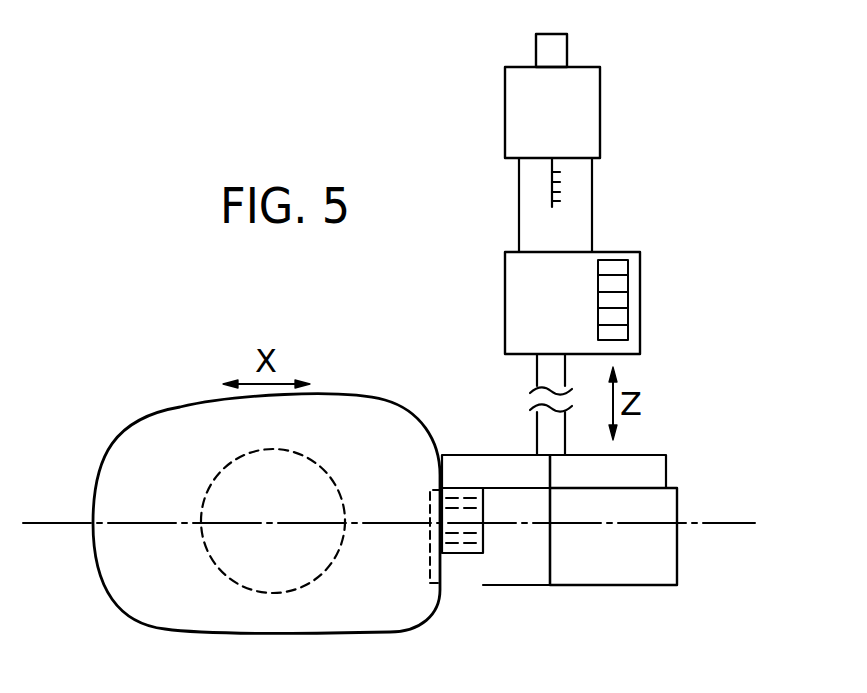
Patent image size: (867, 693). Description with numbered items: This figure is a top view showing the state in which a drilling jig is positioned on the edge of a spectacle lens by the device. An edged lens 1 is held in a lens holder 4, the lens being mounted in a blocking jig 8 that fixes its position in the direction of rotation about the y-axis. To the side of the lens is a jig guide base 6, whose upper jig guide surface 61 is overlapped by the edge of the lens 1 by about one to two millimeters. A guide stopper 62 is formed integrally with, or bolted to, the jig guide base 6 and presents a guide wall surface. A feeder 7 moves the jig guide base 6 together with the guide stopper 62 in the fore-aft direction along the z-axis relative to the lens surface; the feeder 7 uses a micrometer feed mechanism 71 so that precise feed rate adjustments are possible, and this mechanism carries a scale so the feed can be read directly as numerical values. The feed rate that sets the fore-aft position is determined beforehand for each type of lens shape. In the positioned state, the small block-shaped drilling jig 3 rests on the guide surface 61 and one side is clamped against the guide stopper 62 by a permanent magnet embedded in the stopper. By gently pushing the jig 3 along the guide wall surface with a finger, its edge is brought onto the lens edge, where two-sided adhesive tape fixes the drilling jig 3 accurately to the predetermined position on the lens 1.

The lens 1 is at (397, 405).
The drilling jig 3 is at (484, 510).
The lens holder 4 is at (237, 478).
The jig guide base 6 is at (688, 553).
The jig guide surface 61 is at (505, 568).
The guide stopper 62 is at (487, 465).
The feeder 7 is at (660, 327).
The micrometer feed mechanism 71 is at (580, 213).
The blocking jig 8 is at (196, 590).